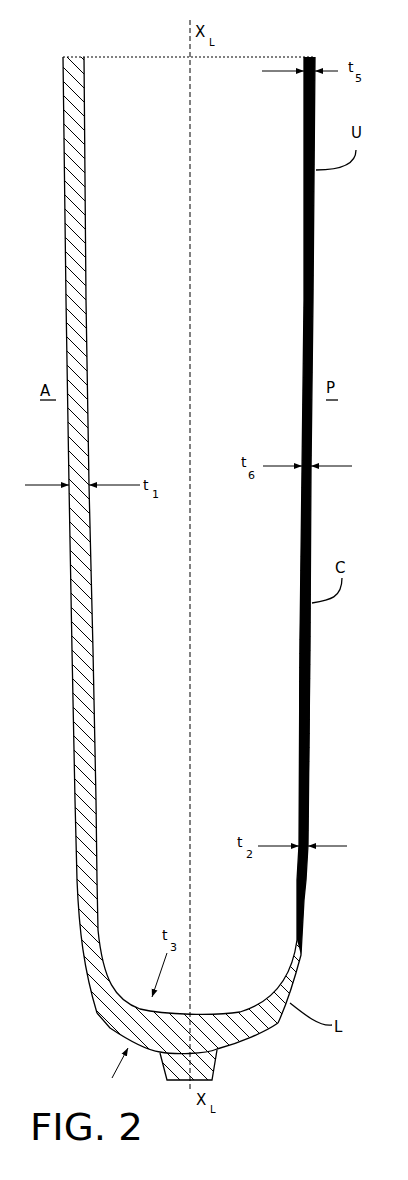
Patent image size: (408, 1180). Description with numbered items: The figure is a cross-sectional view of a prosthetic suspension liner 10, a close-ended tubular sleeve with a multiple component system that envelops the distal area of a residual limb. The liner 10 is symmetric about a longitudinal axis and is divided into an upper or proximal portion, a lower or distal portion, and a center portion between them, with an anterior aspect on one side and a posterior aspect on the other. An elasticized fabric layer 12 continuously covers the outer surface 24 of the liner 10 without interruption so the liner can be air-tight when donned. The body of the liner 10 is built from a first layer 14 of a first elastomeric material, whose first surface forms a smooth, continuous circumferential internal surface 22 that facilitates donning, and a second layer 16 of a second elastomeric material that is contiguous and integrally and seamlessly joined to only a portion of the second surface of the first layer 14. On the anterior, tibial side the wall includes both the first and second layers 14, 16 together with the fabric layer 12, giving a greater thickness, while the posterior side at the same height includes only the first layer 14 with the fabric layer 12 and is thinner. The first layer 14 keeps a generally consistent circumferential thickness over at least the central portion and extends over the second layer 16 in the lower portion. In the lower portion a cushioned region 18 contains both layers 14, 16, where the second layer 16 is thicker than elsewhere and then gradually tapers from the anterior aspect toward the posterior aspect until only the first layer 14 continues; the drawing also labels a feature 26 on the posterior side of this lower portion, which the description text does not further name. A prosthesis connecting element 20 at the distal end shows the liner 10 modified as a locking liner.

The prosthetic suspension liner 10 is at (322, 322).
The elasticized fabric layer 12 is at (73, 565).
The first layer 14 is at (311, 688).
The second layer 16 is at (75, 803).
The cushioned region 18 is at (97, 1013).
The prosthesis connecting element 20 is at (215, 1081).
The internal surface 22 is at (300, 548).
The outer surface 24 is at (317, 238).
The lower side wall portion 26 is at (301, 960).